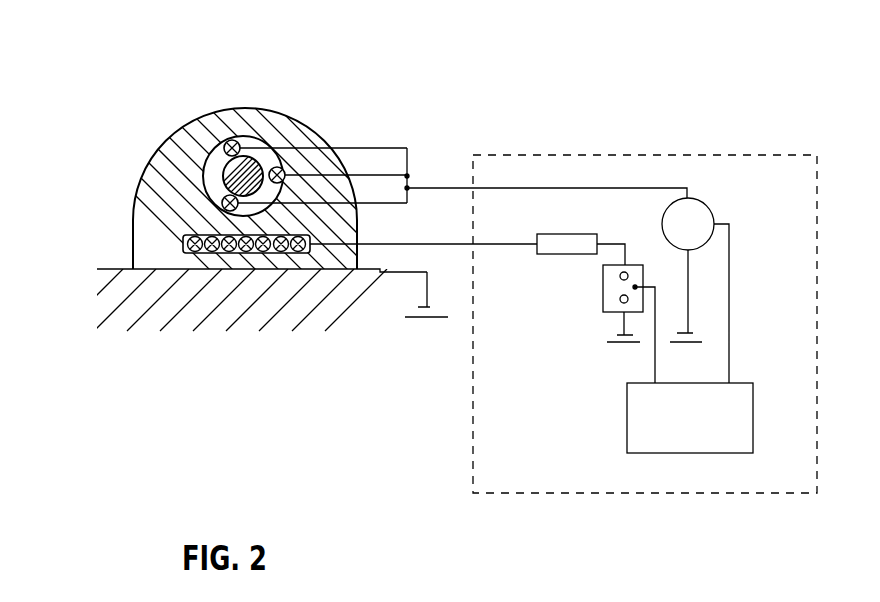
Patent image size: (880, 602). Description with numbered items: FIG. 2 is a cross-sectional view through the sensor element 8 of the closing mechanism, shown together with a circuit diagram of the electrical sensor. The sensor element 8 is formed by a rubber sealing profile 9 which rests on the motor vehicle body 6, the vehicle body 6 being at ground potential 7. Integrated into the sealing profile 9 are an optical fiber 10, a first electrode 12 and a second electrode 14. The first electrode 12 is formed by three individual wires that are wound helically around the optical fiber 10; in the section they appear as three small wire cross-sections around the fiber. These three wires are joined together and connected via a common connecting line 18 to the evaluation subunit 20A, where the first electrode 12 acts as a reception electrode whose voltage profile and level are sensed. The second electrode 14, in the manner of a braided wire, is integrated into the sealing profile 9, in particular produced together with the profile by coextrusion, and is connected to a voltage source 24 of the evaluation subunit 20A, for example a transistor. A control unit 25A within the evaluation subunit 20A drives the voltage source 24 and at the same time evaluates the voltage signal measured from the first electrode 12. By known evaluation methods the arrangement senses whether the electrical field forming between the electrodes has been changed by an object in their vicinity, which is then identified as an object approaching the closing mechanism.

The motor vehicle body 6 is at (123, 314).
The ground potential 7 is at (438, 295).
The sensor element 8 is at (314, 114).
The rubber sealing profile 9 is at (166, 182).
The optical fiber 10 is at (236, 172).
The first electrode 12 is at (297, 150).
The second electrode 14 is at (223, 253).
The common connecting line 18 is at (452, 187).
The evaluation subunit 20A is at (712, 494).
The voltage source 24 is at (713, 206).
The control unit 25A is at (627, 412).